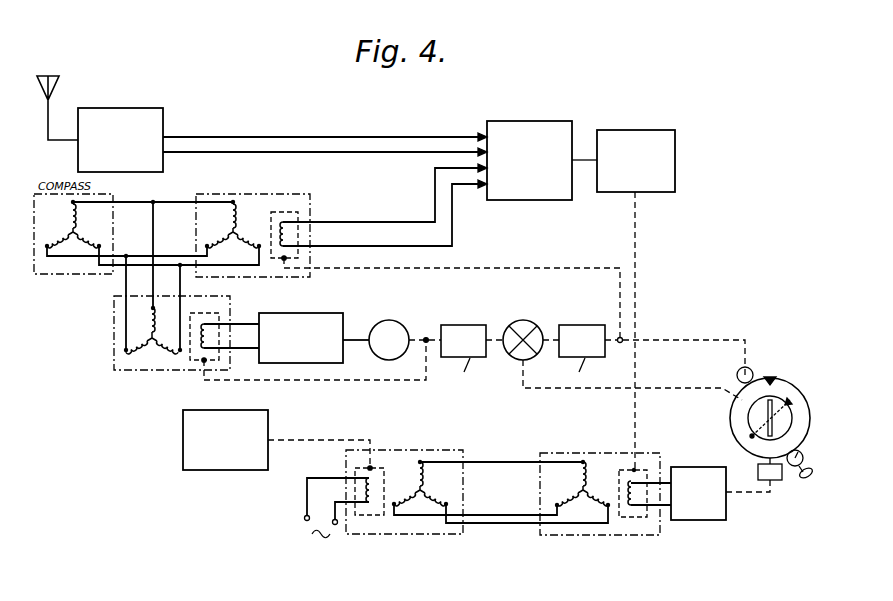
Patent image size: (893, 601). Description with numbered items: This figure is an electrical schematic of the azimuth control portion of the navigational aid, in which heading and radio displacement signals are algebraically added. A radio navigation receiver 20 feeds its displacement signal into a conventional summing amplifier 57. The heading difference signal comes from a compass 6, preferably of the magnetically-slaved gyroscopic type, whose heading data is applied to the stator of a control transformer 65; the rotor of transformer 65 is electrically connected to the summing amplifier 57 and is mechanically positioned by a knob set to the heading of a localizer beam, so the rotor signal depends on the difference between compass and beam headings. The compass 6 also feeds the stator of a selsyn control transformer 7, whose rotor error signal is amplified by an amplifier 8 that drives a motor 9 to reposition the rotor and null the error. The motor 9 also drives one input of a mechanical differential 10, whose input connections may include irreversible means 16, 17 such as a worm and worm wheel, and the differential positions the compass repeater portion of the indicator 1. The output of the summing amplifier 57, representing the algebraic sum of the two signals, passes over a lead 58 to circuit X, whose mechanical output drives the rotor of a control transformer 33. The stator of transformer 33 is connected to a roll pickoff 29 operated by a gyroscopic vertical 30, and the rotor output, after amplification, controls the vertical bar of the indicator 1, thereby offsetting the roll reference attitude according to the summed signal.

The indicator 1 is at (789, 376).
The compass 6 is at (60, 274).
The selsyn control transformer 7 is at (125, 370).
The amplifier 8 is at (330, 313).
The motor 9 is at (394, 320).
The mechanical differential 10 is at (527, 320).
The irreversible means 16 is at (459, 325).
The irreversible means 17 is at (587, 325).
The radio navigation receiver 20 is at (144, 108).
The roll pickoff 29 is at (411, 450).
The gyroscopic vertical 30 is at (215, 470).
The control transformer 33 is at (587, 453).
The summing amplifier 57 is at (540, 121).
The lead 58 is at (582, 160).
The control transformer 65 is at (312, 210).